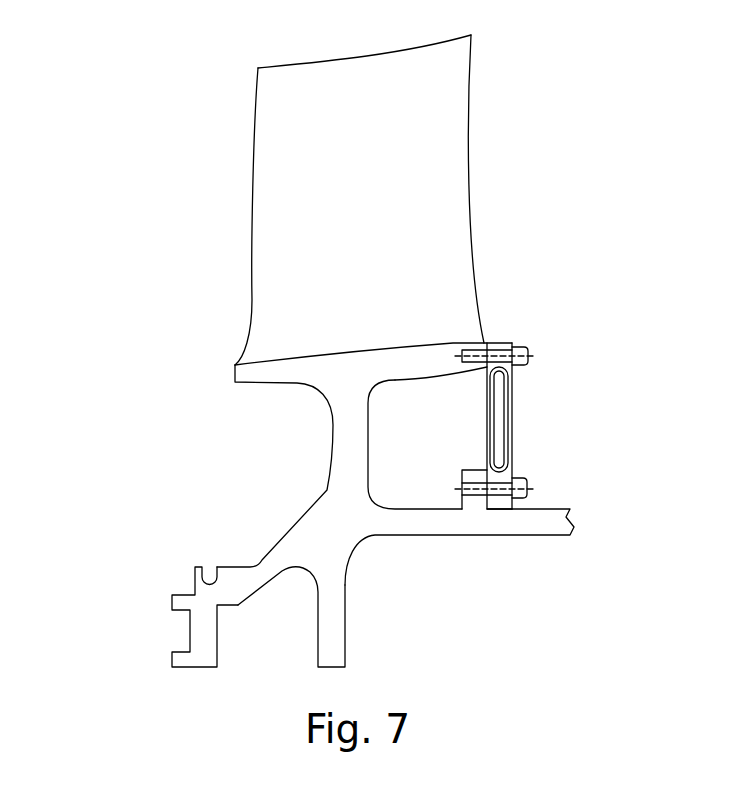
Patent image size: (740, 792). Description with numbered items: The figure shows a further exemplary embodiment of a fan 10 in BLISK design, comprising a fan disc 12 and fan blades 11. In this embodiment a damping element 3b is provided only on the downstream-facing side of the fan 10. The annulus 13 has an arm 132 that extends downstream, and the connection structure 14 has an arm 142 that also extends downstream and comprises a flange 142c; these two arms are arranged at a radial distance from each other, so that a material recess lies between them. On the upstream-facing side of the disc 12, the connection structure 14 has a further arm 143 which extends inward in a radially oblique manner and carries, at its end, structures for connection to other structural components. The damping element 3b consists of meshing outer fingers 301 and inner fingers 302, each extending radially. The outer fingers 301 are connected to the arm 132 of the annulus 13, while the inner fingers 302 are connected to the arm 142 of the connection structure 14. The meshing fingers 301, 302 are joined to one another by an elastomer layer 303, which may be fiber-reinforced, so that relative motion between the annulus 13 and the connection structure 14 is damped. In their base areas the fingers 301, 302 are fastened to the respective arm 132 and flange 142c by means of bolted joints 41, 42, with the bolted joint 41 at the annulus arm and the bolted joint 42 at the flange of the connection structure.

The fan 10 is at (226, 180).
The fan blades 11 is at (272, 244).
The fan disc 12 is at (330, 627).
The annulus 13 is at (331, 383).
The connection structure 14 is at (363, 510).
The arm of the annulus 132 is at (443, 362).
The arm of the connection structure 142 is at (445, 523).
The flange 142c is at (472, 477).
The arm 143 is at (204, 627).
The damping element 3b is at (521, 383).
The outer fingers 301 is at (487, 399).
The inner fingers 302 is at (508, 407).
The elastomer layer 303 is at (490, 432).
The bolted joint 41 is at (520, 348).
The bolted joint 42 is at (527, 488).